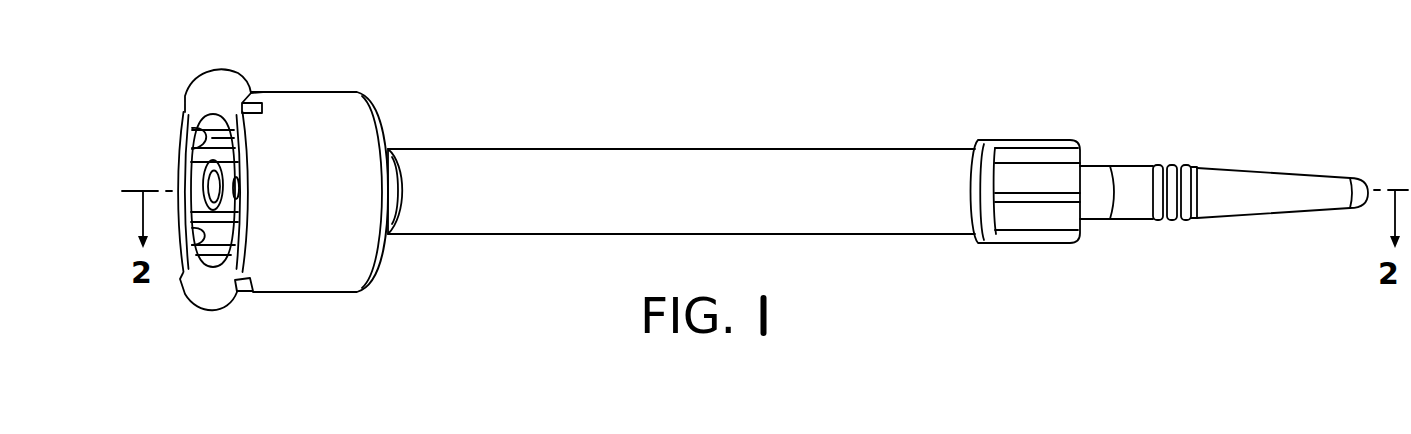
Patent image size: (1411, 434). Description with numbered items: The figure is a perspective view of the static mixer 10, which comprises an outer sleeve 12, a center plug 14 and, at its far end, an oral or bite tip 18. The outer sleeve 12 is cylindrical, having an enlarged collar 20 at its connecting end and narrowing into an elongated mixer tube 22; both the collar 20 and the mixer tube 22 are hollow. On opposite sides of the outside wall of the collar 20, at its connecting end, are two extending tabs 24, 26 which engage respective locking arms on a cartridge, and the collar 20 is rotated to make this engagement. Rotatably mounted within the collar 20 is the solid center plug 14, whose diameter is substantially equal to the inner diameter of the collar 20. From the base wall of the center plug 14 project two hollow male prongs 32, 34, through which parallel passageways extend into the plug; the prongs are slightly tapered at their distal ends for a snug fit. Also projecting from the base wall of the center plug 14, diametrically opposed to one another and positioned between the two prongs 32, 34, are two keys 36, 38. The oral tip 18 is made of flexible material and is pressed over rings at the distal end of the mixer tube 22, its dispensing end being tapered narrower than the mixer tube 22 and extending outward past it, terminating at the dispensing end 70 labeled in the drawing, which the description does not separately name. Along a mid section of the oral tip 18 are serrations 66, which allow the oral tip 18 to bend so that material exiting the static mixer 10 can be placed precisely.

The static mixer 10 is at (846, 126).
The outer sleeve 12 is at (412, 248).
The center plug 14 is at (230, 221).
The oral tip 18 is at (1114, 150).
The collar 20 is at (313, 100).
The mixer tube 22 is at (525, 222).
The extending tab 24 is at (232, 72).
The extending tab 26 is at (223, 313).
The hollow male prong 32 is at (236, 182).
The hollow male prong 34 is at (212, 178).
The key 36 is at (203, 136).
The key 38 is at (198, 248).
The serrations 66 is at (1182, 166).
The outlet tip 70 is at (1368, 192).